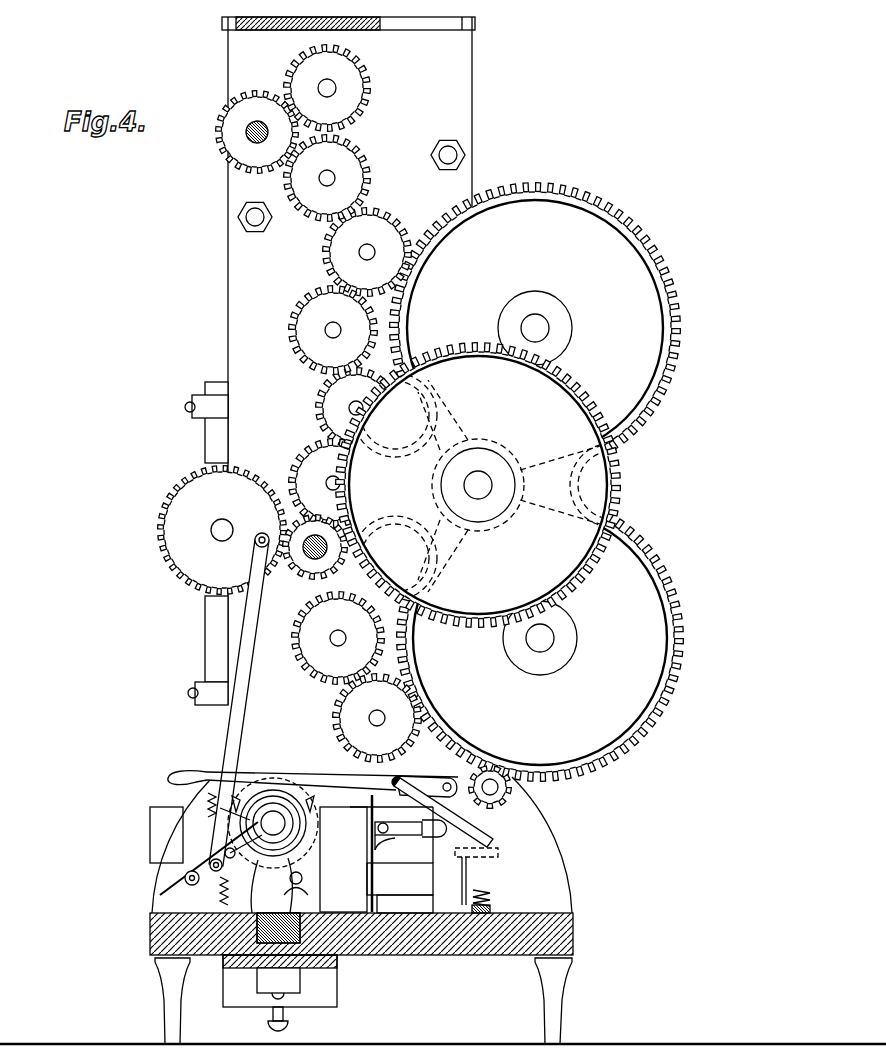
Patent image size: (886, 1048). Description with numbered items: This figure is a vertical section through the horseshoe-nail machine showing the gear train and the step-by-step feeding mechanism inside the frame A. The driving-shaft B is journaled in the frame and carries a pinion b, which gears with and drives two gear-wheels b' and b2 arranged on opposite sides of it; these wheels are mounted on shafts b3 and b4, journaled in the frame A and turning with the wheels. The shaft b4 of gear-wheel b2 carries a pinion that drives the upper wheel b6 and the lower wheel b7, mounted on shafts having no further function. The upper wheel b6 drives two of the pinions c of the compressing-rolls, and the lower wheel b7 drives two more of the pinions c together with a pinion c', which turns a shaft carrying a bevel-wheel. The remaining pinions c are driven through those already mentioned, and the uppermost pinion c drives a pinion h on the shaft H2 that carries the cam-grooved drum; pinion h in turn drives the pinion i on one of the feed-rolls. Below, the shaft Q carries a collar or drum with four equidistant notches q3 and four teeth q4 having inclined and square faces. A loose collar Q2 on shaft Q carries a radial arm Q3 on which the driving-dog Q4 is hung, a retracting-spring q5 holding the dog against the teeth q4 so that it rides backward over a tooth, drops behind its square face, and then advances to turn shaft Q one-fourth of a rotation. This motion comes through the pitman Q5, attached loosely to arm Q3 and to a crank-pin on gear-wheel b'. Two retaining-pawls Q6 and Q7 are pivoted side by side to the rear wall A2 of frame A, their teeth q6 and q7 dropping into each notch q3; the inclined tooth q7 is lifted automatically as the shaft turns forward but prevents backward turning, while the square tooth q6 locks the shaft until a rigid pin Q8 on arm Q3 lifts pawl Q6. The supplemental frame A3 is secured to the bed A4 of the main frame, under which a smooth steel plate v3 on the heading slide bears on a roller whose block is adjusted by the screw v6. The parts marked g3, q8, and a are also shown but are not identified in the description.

The frame A is at (362, 465).
The rear wall A2 is at (314, 258).
The supplemental frame A3 is at (152, 835).
The bed A4 is at (443, 978).
The pinion i is at (327, 88).
The pinion h is at (241, 132).
The shaft H2 is at (248, 136).
The pinions of the compressing-rolls c is at (368, 485).
The pinion c' is at (491, 796).
The upper gear-wheel b6 is at (535, 328).
The gear-wheel b2 is at (497, 485).
The shaft b4 is at (483, 485).
The lower gear-wheel b7 is at (540, 638).
The gear-wheel b' is at (222, 530).
The shaft b3 is at (222, 541).
The gear g3 is at (172, 497).
The smooth plate v3 is at (204, 543).
The pinion b is at (311, 562).
The driving-shaft B is at (308, 557).
The shaft Q is at (273, 845).
The loose collar Q2 is at (343, 859).
The radial arm Q3 is at (213, 894).
The driving-dog Q4 is at (303, 883).
The connecting-rod or pitman Q5 is at (232, 752).
The retaining-pawl Q6 is at (381, 833).
The retaining-pawl Q7 is at (395, 800).
The rigid pin Q8 is at (190, 866).
The notches q3 is at (277, 832).
The teeth q4 is at (382, 860).
The retracting-spring q5 is at (252, 828).
The tooth q6 is at (381, 853).
The tooth q7 is at (274, 788).
The link q8 is at (216, 818).
The slide a is at (411, 825).
The screw v6 is at (287, 1019).